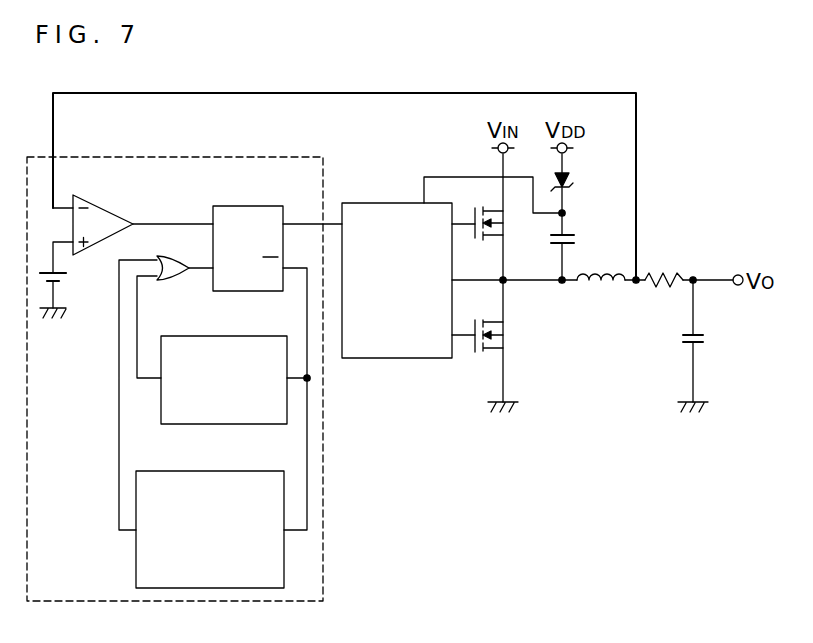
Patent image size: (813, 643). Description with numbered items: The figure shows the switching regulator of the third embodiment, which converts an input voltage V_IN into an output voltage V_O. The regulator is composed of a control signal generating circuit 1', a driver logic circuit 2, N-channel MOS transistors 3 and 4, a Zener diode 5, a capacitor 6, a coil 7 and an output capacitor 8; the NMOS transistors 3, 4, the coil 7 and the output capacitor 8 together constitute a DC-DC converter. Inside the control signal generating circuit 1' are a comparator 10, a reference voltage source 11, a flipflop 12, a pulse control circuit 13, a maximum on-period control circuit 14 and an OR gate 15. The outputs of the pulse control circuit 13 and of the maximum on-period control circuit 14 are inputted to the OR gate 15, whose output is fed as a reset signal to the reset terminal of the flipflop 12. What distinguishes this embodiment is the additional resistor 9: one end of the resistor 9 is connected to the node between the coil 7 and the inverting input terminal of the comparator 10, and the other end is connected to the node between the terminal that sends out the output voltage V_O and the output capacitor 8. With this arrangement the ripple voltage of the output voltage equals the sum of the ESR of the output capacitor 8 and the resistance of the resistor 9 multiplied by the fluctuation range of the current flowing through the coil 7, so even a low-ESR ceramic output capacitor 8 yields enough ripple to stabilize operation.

The control signal generating circuit 1' is at (175, 359).
The comparator 10 is at (102, 199).
The reference voltage source 11 is at (66, 282).
The flipflop 12 is at (250, 205).
The pulse control circuit 13 is at (227, 336).
The maximum on-period control circuit 14 is at (210, 471).
The OR gate 15 is at (168, 282).
The driver logic circuit 2 is at (400, 203).
The N-channel MOS transistor 3 is at (512, 226).
The N-channel MOS transistor 4 is at (512, 338).
The Zener diode 5 is at (573, 180).
The capacitor 6 is at (577, 239).
The coil 7 is at (598, 292).
The output capacitor 8 is at (707, 340).
The resistor 9 is at (664, 292).